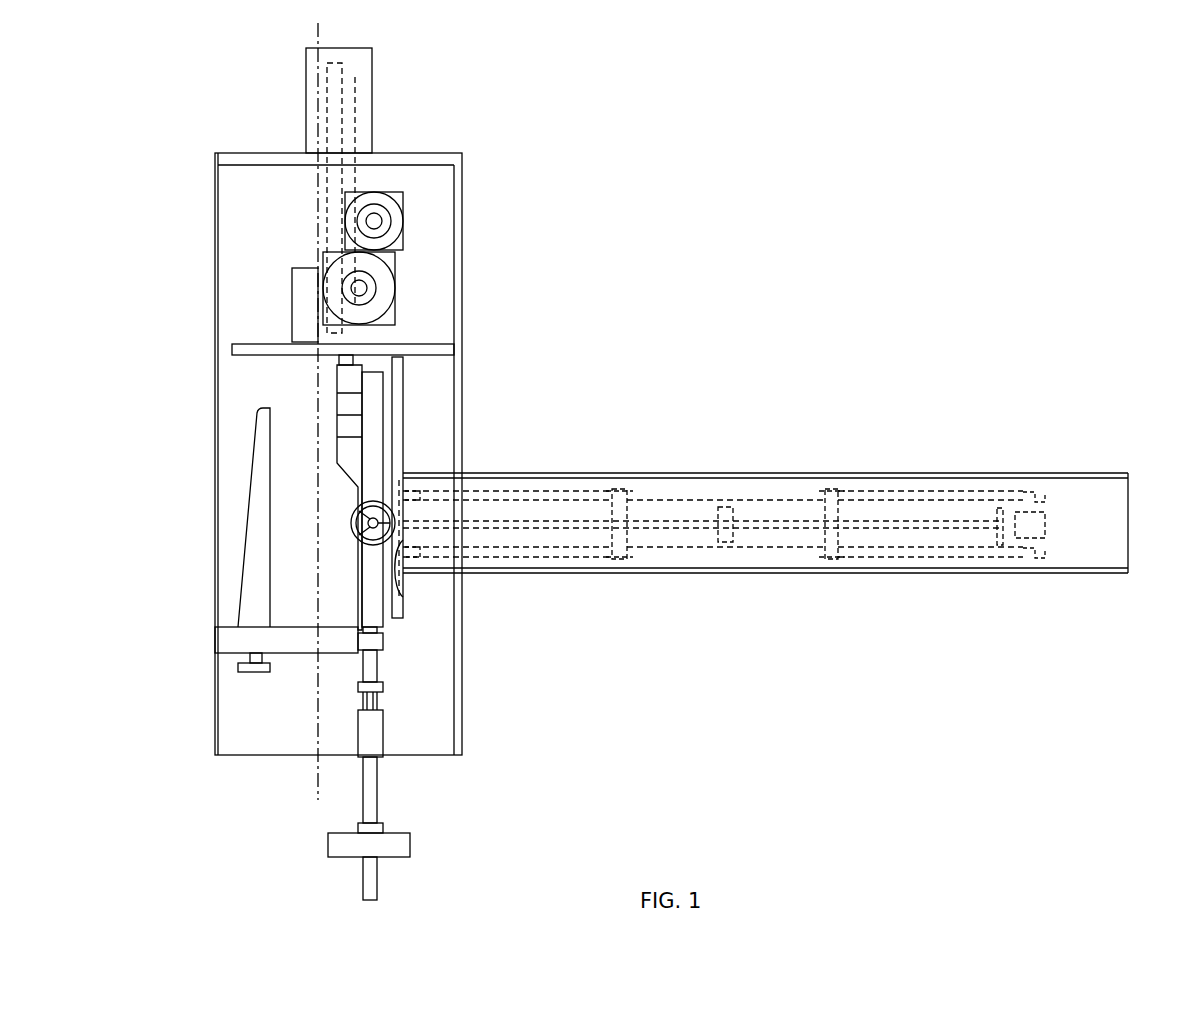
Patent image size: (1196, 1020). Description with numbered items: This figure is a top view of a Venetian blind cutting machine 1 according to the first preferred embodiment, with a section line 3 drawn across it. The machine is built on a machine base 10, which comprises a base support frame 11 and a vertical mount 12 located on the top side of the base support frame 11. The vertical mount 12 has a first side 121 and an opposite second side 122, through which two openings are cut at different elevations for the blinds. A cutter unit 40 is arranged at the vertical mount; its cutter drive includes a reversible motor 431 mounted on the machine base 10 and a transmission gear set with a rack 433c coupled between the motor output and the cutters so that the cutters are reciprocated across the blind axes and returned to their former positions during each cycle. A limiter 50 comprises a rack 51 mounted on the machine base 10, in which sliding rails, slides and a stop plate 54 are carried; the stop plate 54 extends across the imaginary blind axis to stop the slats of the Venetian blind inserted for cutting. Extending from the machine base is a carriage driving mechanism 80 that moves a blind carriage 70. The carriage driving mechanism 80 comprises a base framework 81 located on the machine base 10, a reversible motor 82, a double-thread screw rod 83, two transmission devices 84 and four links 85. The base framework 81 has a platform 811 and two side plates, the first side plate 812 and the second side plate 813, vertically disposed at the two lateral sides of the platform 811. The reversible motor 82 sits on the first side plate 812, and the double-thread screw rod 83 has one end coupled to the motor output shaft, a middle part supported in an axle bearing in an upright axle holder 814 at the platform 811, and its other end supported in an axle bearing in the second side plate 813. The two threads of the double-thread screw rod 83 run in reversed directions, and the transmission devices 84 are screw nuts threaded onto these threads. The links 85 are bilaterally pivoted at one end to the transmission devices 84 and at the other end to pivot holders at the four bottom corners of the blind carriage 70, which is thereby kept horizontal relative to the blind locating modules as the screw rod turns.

The Venetian blind cutting machine 1 is at (992, 288).
The section line 3- 3 is at (318, 20).
The machine base 10 is at (425, 454).
The base support frame 11 is at (462, 407).
The vertical mount 12 is at (402, 433).
The first side 121 is at (405, 390).
The second side 122 is at (338, 362).
The cutter unit 40 is at (390, 134).
The reversible motor 431 is at (394, 312).
The rack 433c is at (346, 82).
The limiter 50 is at (261, 654).
The rack 51 is at (218, 642).
The stop plate 54 is at (257, 517).
The blind carriage 70 is at (1083, 477).
The carriage driving mechanism 80 is at (743, 608).
The base framework 81 is at (724, 584).
The platform 811 is at (748, 548).
The first side plate 812 is at (1000, 547).
The second side plate 813 is at (400, 598).
The upright axle holder 814 is at (717, 535).
The reversible motor 82 is at (1029, 581).
The double-thread screw rod 83 is at (927, 530).
The transmission device 84 is at (628, 553).
The link 85 is at (585, 490).